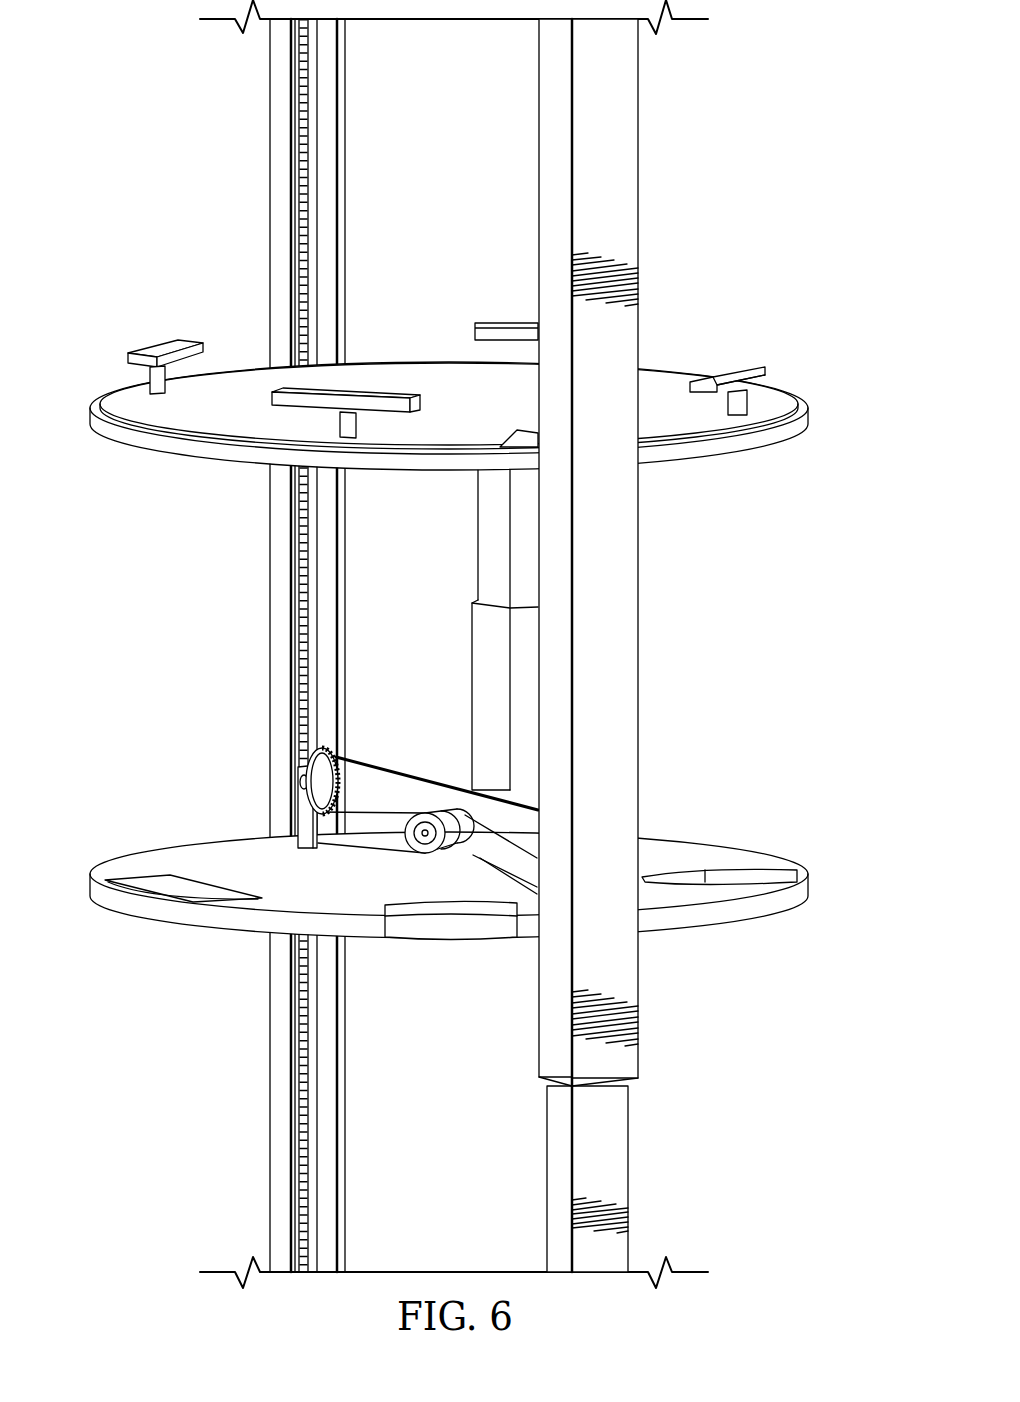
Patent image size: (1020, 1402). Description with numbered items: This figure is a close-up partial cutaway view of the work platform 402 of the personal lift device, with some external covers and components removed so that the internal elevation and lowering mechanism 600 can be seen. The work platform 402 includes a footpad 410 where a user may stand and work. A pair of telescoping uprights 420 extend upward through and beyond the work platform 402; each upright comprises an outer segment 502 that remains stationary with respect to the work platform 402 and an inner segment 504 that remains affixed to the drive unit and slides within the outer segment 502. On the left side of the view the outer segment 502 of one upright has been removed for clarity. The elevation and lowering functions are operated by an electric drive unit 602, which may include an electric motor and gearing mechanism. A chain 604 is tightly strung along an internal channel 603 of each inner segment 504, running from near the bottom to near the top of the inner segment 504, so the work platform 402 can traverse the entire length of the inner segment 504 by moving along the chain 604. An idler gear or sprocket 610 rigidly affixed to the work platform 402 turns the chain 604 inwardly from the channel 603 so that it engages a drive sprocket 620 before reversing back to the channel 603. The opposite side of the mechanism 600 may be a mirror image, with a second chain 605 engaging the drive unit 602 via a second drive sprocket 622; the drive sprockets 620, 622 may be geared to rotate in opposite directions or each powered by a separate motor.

The work platform 402 is at (765, 695).
The footpad 410 is at (427, 372).
The telescoping uprights 420 is at (640, 640).
The outer segment 502 is at (638, 212).
The inner segment 504 is at (278, 199).
The elevation and lowering mechanism 600 is at (256, 793).
The electric drive unit 602 is at (457, 782).
The internal channel 603 is at (330, 209).
The chain 604 is at (303, 1067).
The second chain 605 is at (490, 870).
The idler gear or sprocket 610 is at (332, 748).
The drive sprocket 620 is at (467, 812).
The second drive sprocket 622 is at (415, 838).